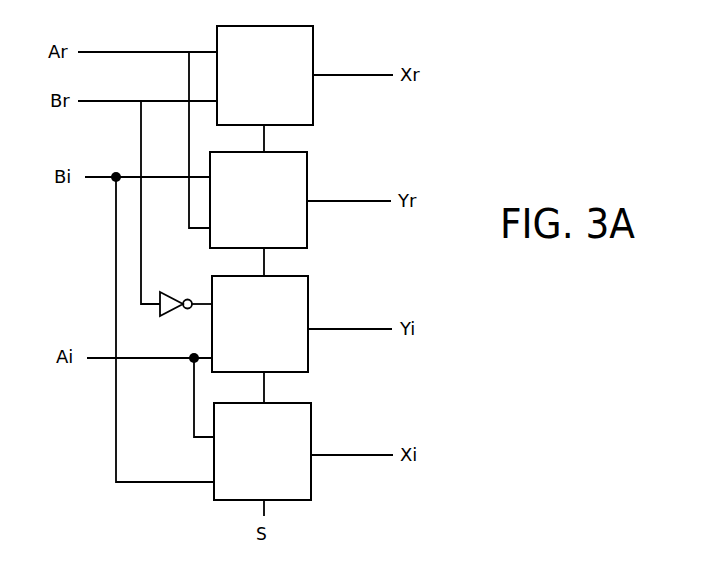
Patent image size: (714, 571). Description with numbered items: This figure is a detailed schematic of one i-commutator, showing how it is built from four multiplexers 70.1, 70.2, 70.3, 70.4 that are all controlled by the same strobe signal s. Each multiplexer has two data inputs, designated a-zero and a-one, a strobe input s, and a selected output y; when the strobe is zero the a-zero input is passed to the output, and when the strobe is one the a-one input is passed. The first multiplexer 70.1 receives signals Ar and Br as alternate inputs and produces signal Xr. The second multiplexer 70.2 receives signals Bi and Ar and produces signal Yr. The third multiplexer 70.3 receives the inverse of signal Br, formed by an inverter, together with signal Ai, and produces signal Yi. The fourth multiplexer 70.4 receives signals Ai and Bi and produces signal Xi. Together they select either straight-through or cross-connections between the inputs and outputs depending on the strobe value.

The multiplexer 70.1 is at (313, 43).
The second multiplexer 70.2 is at (307, 169).
The third multiplexer 70.3 is at (308, 302).
The fourth multiplexer 70.4 is at (311, 428).